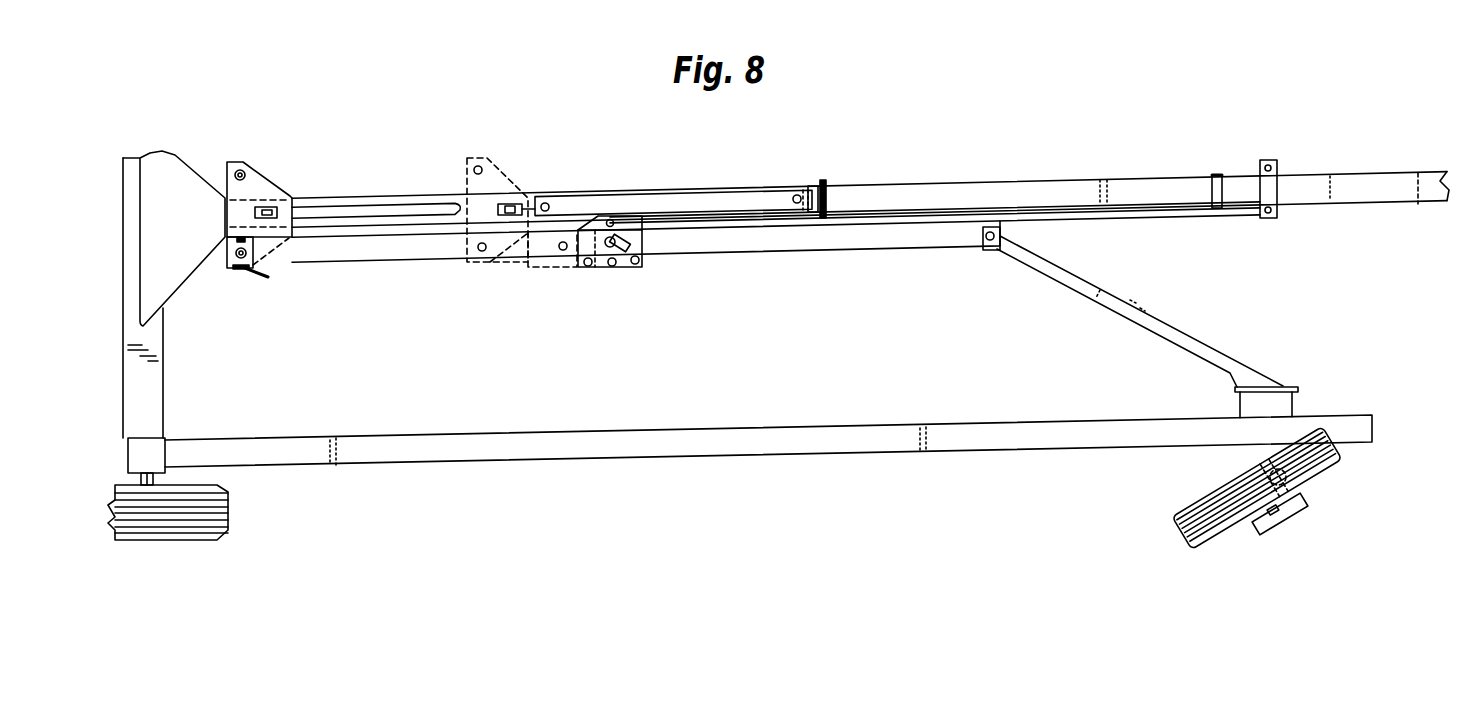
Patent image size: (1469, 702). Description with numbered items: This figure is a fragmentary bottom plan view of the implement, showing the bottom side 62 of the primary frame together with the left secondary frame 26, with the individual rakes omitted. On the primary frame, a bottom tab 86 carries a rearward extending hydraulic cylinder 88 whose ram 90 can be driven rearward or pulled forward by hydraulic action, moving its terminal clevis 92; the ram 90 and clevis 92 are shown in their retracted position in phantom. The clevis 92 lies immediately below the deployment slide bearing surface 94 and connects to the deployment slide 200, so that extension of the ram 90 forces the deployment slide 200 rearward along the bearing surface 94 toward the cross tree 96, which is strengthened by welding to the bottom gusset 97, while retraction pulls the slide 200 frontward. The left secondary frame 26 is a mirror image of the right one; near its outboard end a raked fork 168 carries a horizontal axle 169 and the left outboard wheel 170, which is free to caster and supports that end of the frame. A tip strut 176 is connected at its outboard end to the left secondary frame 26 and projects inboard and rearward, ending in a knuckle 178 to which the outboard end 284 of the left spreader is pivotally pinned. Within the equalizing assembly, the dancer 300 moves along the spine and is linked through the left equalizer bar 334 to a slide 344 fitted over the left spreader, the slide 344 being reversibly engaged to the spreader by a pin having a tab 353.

The left secondary frame 26 is at (812, 452).
The bottom side 62 is at (1001, 211).
The bottom tab 86 is at (823, 178).
The hydraulic cylinder 88 is at (675, 203).
The ram 90 is at (318, 198).
The terminal clevis 92 is at (288, 195).
The deployment slide bearing surface 94 is at (395, 197).
The cross tree 96 is at (161, 399).
The bottom gusset 97 is at (184, 234).
The raked fork 168 is at (1288, 520).
The horizontal axle 169 is at (1270, 517).
The left outboard wheel 170 is at (1172, 533).
The tip strut 176 is at (1160, 312).
The knuckle 178 is at (987, 250).
The deployment slide 200 is at (224, 238).
The outboard end of left spreader 284 is at (320, 265).
The dancer 300 is at (1277, 163).
The left equalizer bar 334 is at (1103, 219).
The slide 344 is at (636, 268).
The tab 353 is at (603, 253).